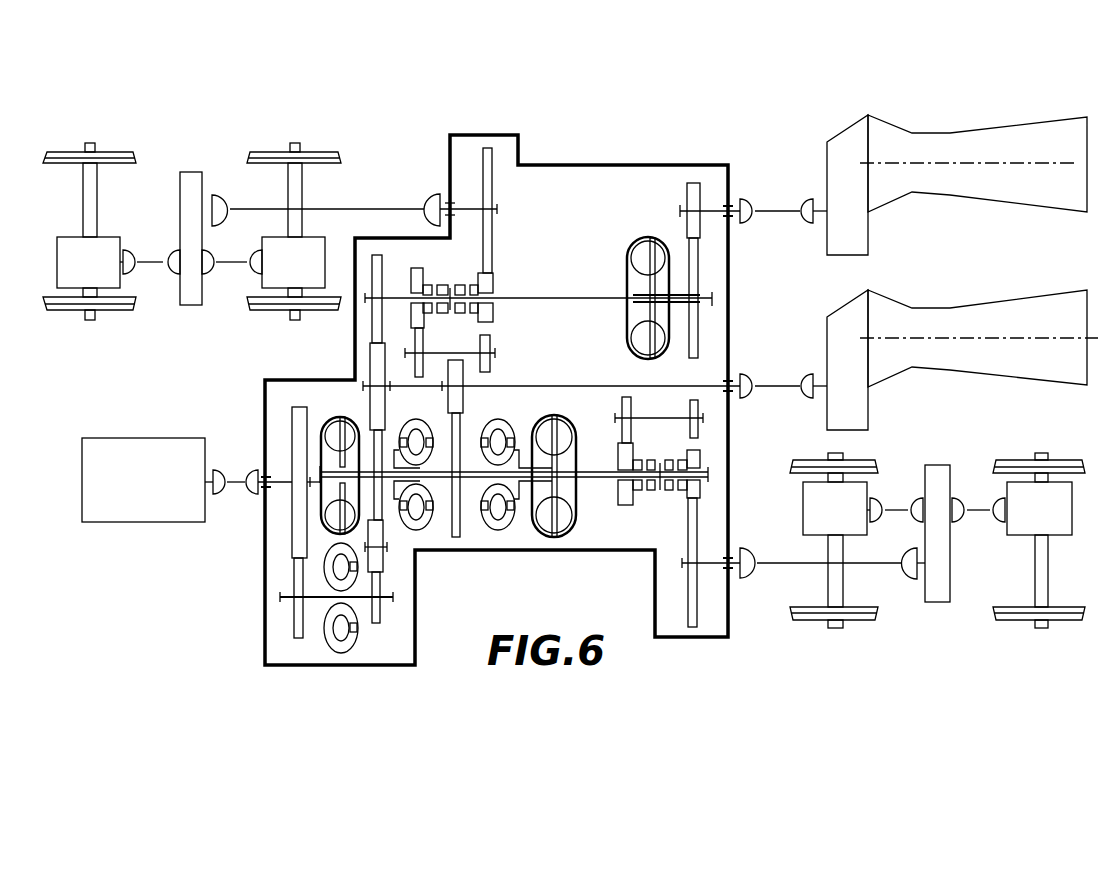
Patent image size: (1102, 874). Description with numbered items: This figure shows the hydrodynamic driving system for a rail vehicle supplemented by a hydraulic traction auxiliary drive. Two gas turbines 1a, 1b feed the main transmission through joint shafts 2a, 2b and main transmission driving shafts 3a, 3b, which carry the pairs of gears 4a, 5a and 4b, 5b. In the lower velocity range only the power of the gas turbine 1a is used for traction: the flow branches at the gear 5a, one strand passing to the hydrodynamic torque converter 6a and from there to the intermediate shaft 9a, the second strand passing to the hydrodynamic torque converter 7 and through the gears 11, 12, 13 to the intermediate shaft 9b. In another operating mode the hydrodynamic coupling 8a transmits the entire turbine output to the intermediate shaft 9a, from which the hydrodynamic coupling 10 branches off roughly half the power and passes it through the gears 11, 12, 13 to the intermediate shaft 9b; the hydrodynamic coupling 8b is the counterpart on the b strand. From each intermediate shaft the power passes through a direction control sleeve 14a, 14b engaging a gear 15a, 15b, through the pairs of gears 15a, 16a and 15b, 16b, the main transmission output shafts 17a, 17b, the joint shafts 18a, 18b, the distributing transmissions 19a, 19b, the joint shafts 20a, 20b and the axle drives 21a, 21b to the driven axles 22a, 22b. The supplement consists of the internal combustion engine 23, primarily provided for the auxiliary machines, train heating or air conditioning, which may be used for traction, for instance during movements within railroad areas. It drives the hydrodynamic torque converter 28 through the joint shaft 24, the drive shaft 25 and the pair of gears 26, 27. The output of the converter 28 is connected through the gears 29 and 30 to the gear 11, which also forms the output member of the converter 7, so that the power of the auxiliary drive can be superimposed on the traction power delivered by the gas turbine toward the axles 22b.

The gas turbine 1a is at (1005, 318).
The gas turbine 1b is at (1005, 157).
The joint shaft 2a is at (772, 385).
The joint shaft 2b is at (783, 210).
The main transmission driving shaft 3a is at (557, 386).
The main transmission driving shaft 3b is at (710, 210).
The gear 4a is at (460, 393).
The gear 4b is at (692, 197).
The gear 5a is at (457, 523).
The gear 5b is at (675, 287).
The hydrodynamic torque converter 6a is at (498, 508).
The hydrodynamic torque converter 7 is at (412, 438).
The hydrodynamic coupling 8a is at (550, 520).
The hydrodynamic coupling 8b is at (645, 243).
The intermediate shaft 9a is at (598, 478).
The intermediate shaft 9b is at (558, 298).
The hydrodynamic coupling 10 is at (335, 442).
The gear 11 is at (378, 452).
The gear 12 is at (377, 372).
The gear 13 is at (375, 267).
The direction control sleeve 14a is at (670, 487).
The direction control sleeve 14b is at (440, 285).
The gear 15a is at (695, 458).
The gear 15b is at (487, 287).
The gear 16a is at (695, 520).
The gear 16b is at (487, 177).
The transmission output shaft 17a is at (700, 563).
The main transmission output shaft 17b is at (449, 206).
The joint shaft 18a is at (797, 563).
The joint shaft 18b is at (250, 208).
The distributing transmission 19a is at (937, 482).
The distributing transmission 19b is at (193, 183).
The joint shafts 20a is at (897, 508).
The joint shafts 20b is at (153, 262).
The axle drive 21a is at (952, 485).
The axle drive 21b is at (68, 262).
The axles 22a is at (833, 595).
The axles 22b is at (90, 148).
The internal combustion engine 23 is at (128, 468).
The joint shaft 24 is at (234, 470).
The drive shaft 25 is at (282, 484).
The gear 26 is at (298, 417).
The gear 27 is at (297, 573).
The hydrodynamic torque converter 28 is at (342, 622).
The gear 29 is at (378, 613).
The gear 30 is at (378, 552).